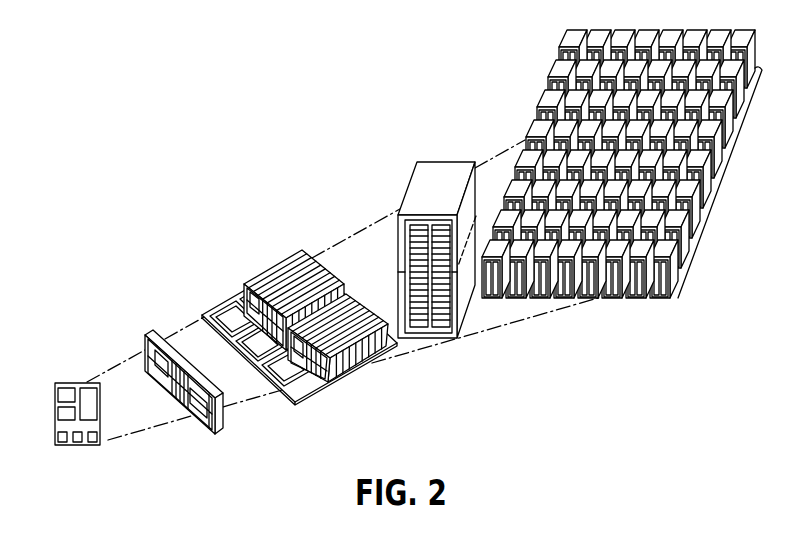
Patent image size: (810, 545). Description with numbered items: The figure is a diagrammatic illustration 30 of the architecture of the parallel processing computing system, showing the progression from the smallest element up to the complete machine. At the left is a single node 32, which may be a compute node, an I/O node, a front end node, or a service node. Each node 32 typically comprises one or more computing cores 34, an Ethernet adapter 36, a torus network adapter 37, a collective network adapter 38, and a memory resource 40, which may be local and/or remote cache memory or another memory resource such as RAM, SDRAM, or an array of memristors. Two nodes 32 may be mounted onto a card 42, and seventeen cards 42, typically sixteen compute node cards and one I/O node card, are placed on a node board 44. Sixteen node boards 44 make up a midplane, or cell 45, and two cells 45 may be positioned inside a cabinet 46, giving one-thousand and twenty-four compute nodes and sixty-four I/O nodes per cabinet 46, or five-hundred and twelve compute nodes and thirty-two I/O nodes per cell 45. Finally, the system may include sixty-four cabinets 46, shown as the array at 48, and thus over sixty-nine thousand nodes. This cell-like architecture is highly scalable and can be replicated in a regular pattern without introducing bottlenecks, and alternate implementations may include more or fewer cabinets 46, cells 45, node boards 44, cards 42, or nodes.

The diagrammatic illustration 30 is at (216, 163).
The node 32 is at (115, 398).
The computing cores 34 is at (47, 404).
The Ethernet adapter 36 is at (62, 442).
The torus network adapter 37 is at (78, 443).
The collective network adapter 38 is at (95, 442).
The memory resource 40 is at (93, 407).
The card 42 is at (156, 334).
The node board 44 is at (297, 404).
The cell 45 is at (473, 200).
The cabinet 46 is at (451, 244).
The sixty-four cabinets 48 is at (691, 265).